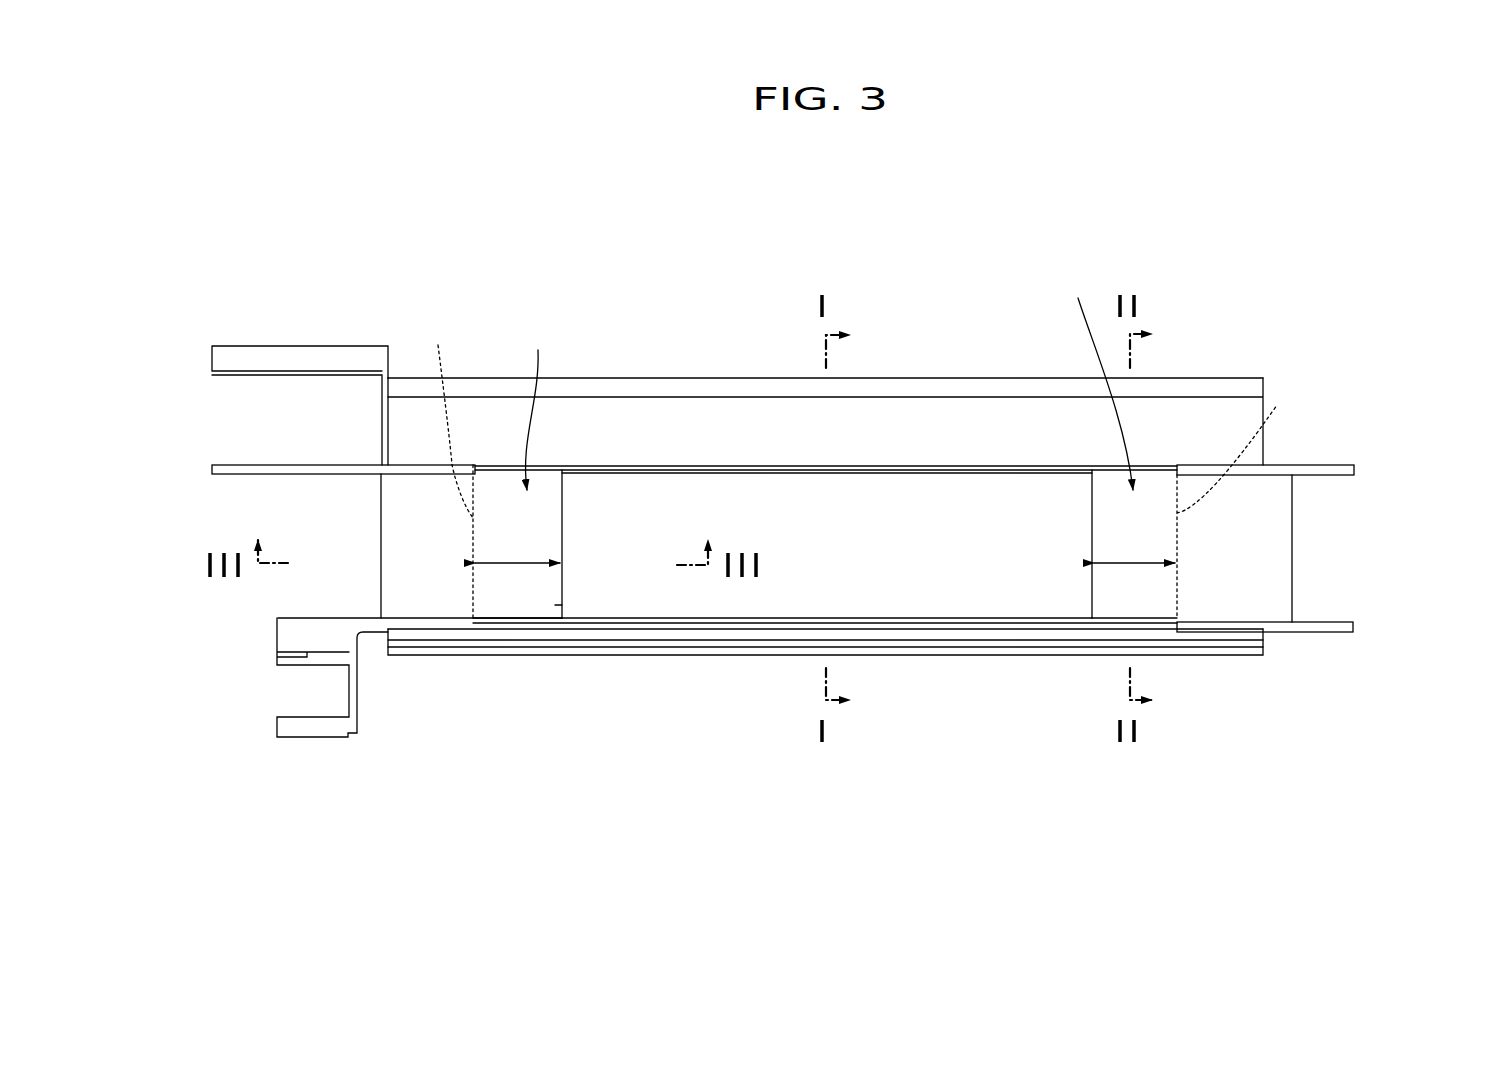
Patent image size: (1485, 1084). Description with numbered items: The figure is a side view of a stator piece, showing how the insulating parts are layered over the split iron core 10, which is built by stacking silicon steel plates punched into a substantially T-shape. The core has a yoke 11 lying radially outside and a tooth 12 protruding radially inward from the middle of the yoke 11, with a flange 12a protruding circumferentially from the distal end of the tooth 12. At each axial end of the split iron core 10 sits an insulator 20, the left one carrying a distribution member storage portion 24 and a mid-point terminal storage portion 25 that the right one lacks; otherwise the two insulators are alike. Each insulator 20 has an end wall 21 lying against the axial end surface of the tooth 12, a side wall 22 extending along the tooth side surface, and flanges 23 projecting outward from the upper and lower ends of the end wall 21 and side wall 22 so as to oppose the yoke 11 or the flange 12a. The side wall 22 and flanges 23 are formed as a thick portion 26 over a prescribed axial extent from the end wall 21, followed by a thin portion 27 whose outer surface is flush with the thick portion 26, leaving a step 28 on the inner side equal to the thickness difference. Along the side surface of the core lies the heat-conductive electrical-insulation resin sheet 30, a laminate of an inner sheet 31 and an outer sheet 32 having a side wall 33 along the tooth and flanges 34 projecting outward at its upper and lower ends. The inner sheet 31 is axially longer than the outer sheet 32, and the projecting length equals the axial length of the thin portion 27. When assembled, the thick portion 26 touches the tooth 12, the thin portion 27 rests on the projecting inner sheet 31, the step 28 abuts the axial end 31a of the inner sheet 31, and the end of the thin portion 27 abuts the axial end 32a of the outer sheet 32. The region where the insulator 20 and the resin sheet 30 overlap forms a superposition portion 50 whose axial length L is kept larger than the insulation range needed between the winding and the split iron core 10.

The split iron core 10 is at (720, 378).
The yoke 11 is at (630, 410).
The tooth 12 is at (887, 580).
The flange 12a is at (690, 655).
The insulator 20 is at (270, 346).
The end wall 21 is at (380, 500).
The side wall 22 is at (418, 600).
The flange 23 is at (220, 476).
The distribution member storage portion 24 is at (300, 415).
The mid-point terminal storage portion 25 is at (290, 692).
The thick portion 26 is at (448, 602).
The thin portion 27 is at (515, 597).
The step 28 is at (485, 464).
The heat-conductive electrical-insulation resin sheet 30 is at (752, 605).
The inner sheet 31 is at (1105, 460).
The axial end of inner sheet 31a is at (869, 466).
The outer sheet 32 is at (950, 500).
The axial end of outer sheet 32a is at (558, 606).
The side wall 33 is at (948, 610).
The flange 34 is at (1020, 465).
The superposition portion 50 is at (827, 377).